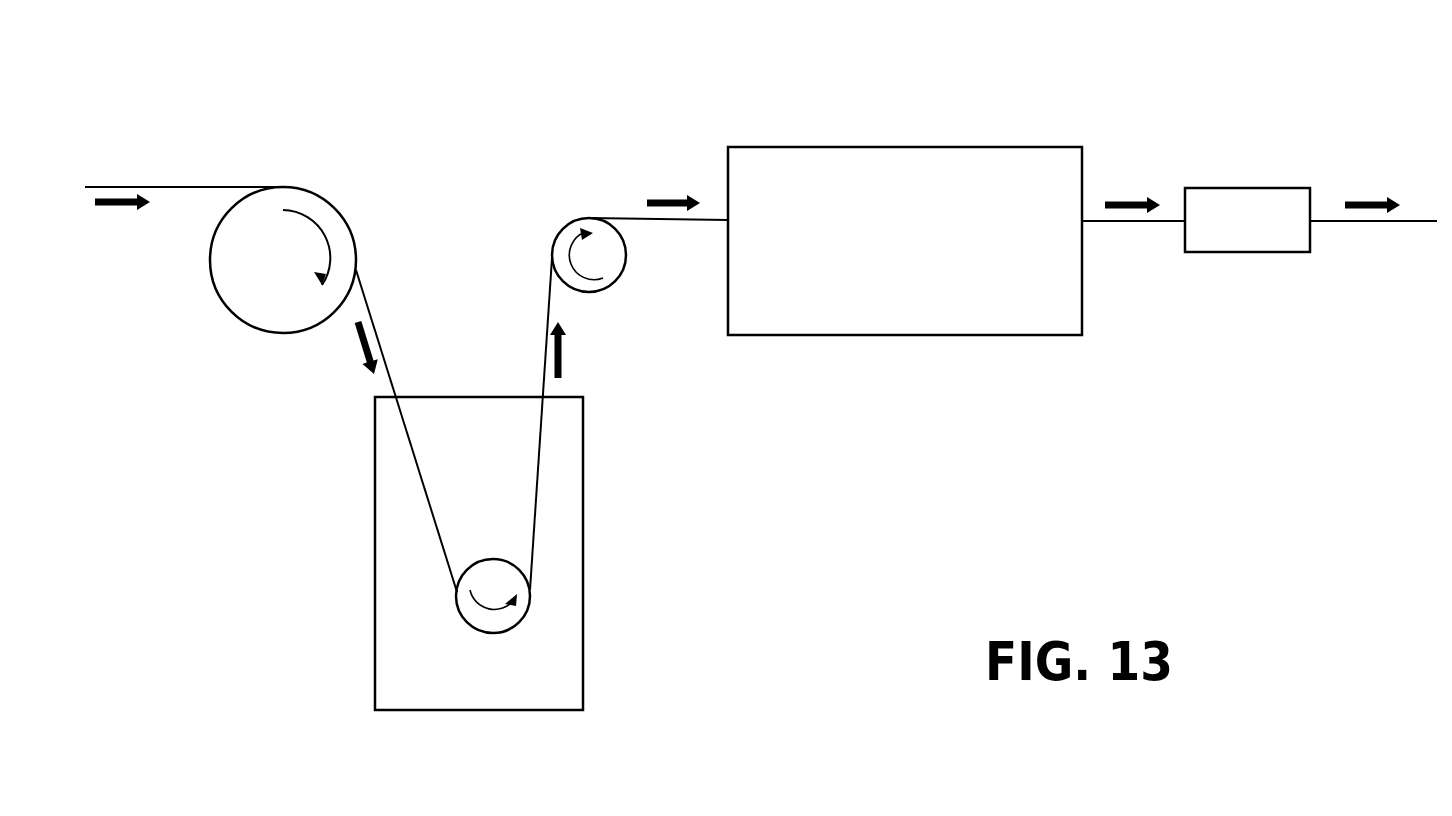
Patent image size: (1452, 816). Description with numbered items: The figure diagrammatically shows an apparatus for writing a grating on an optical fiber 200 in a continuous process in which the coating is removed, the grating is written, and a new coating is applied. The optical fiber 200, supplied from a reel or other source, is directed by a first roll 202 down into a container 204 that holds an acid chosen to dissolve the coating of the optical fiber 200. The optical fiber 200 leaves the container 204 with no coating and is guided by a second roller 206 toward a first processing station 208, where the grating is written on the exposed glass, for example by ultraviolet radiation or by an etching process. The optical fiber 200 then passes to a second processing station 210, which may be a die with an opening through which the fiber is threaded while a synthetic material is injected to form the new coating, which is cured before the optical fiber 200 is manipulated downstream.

The optical fiber 200 is at (160, 185).
The first roll 202 is at (230, 280).
The container 204 is at (476, 397).
The second roller 206 is at (600, 272).
The first processing station 208 is at (903, 147).
The second processing station 210 is at (1250, 188).